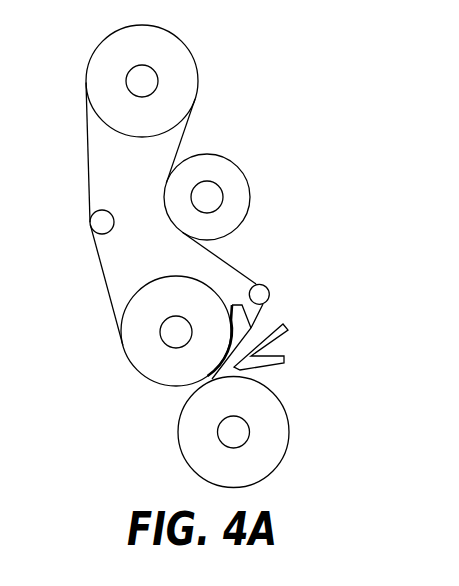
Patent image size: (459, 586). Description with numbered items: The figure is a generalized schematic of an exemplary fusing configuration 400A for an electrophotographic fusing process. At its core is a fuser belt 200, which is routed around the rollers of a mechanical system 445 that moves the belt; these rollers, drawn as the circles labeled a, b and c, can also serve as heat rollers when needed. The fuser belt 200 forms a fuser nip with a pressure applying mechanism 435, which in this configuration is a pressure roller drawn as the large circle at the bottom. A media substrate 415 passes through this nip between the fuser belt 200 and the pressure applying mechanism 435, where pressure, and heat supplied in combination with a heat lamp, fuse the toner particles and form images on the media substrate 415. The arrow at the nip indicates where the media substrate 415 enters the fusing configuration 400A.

The fusing configuration 400A is at (254, 36).
The mechanical system 445 is at (206, 117).
The fuser belt 200 is at (103, 288).
The media substrate 415 is at (185, 392).
The pressure applying mechanism 435 is at (292, 430).